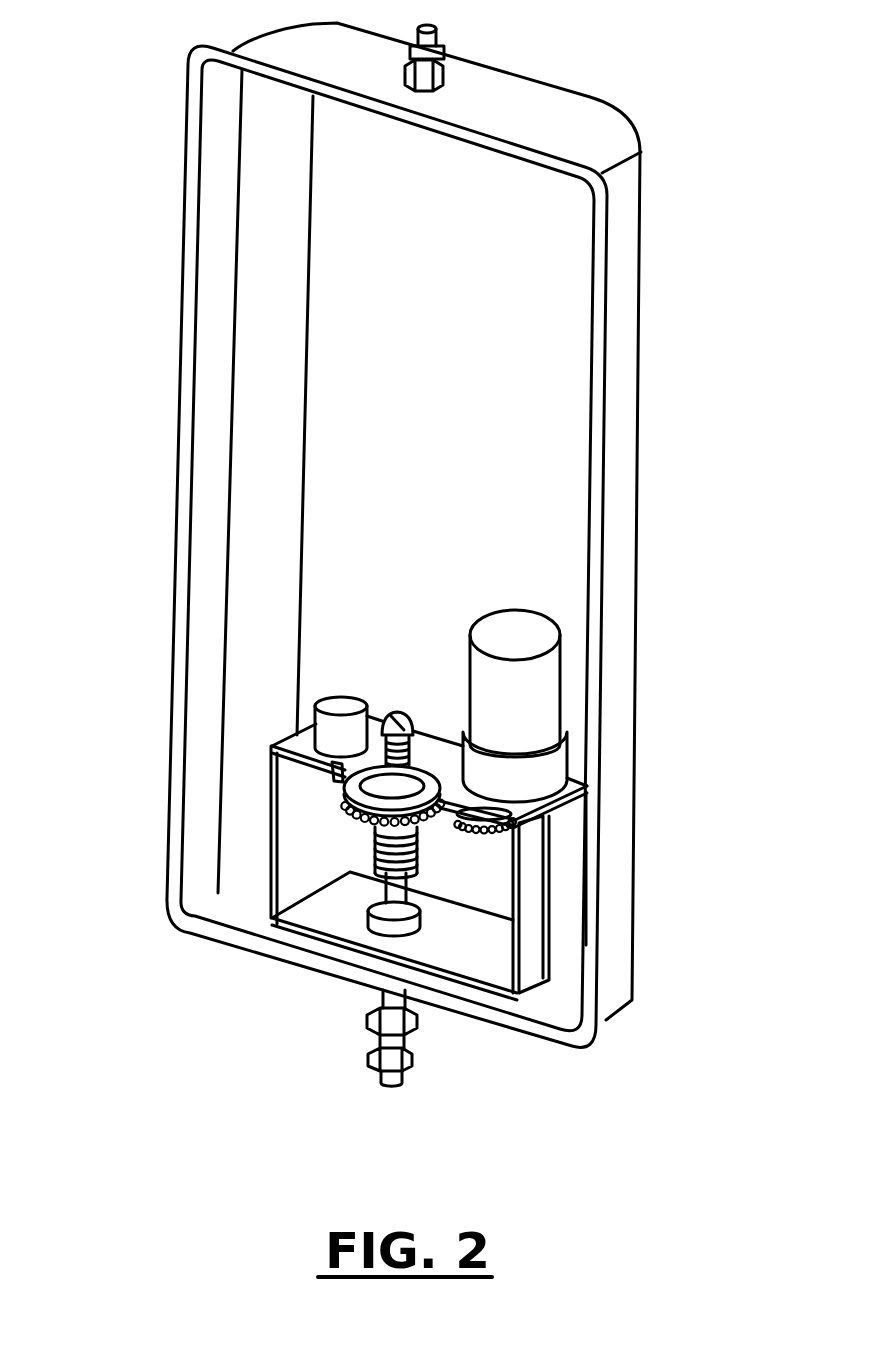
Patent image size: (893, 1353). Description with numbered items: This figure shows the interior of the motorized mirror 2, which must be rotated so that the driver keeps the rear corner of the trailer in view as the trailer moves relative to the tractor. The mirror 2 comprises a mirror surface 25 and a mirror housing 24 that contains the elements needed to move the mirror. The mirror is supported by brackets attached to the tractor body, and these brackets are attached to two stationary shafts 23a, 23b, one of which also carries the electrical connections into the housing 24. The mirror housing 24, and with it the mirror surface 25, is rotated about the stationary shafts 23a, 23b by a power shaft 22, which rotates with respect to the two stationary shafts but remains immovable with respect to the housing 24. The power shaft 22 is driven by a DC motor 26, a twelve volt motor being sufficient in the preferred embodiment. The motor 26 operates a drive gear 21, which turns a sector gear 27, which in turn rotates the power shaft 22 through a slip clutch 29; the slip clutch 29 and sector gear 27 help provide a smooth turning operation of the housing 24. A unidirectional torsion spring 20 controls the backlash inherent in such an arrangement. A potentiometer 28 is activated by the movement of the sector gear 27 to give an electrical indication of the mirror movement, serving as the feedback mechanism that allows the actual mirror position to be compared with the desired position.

The mirror 2 is at (472, 1062).
The unidirectional torsion spring 20 is at (442, 745).
The drive gear 21 is at (502, 838).
The power shaft 22 is at (368, 906).
The stationary shaft 23a is at (370, 1047).
The stationary shaft 23b is at (435, 43).
The mirror housing 24 is at (644, 172).
The mirror surface 25 is at (206, 251).
The DC motor 26 is at (543, 690).
The sector gear 27 is at (350, 806).
The potentiometer 28 is at (318, 701).
The slip clutch 29 is at (365, 856).